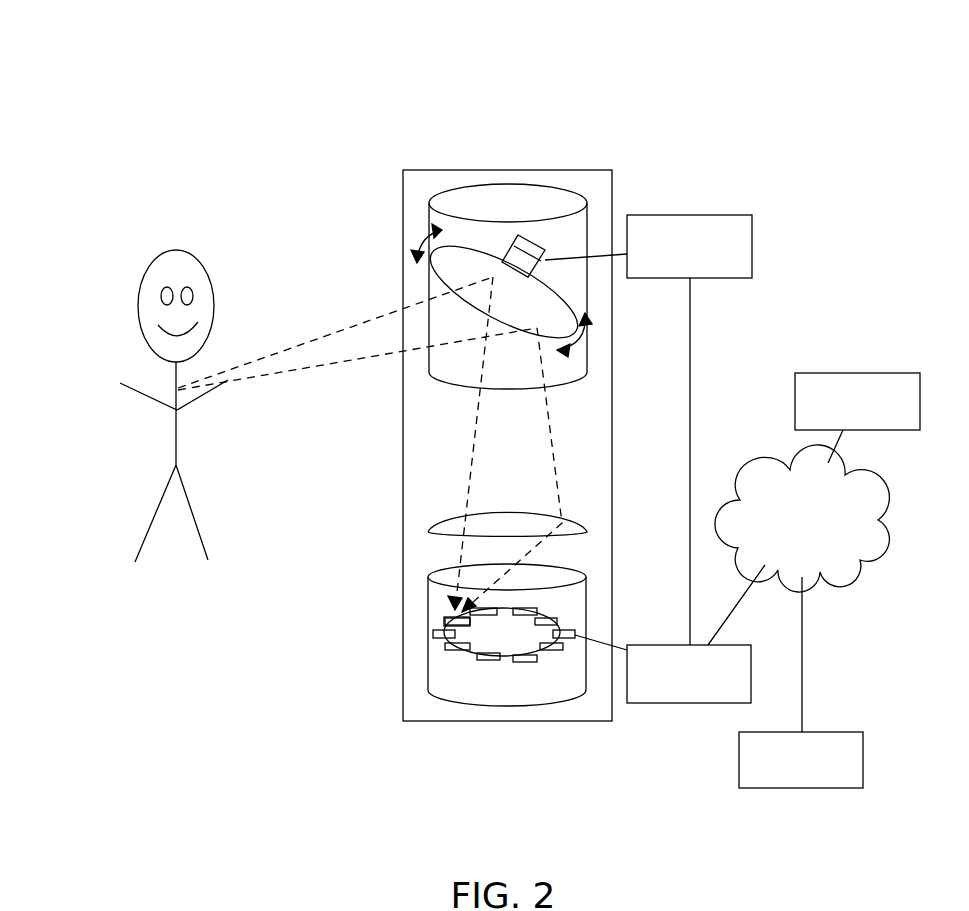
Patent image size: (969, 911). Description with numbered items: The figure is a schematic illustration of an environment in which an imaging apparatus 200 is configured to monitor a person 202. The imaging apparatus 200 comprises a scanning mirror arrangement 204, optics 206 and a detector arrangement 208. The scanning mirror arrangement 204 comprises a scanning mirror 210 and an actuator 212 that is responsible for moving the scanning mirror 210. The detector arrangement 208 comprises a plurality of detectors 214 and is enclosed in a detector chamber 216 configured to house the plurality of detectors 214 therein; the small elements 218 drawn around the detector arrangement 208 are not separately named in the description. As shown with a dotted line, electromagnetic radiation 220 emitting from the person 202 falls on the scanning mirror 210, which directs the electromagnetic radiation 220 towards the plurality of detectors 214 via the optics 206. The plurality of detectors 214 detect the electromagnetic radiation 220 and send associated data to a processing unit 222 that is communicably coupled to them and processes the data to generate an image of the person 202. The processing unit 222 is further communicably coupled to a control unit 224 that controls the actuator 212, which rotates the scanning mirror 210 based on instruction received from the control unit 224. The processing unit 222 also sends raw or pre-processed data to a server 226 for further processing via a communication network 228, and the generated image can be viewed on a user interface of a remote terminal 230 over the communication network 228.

The imaging apparatus 200 is at (402, 168).
The person 202 is at (147, 277).
The scanning mirror arrangement 204 is at (493, 190).
The optics 206 is at (575, 523).
The detector arrangement 208 is at (505, 660).
The scanning mirror 210 is at (473, 257).
The actuator 212 is at (538, 247).
The detectors 214 is at (447, 622).
The detector chamber 216 is at (433, 680).
The sensor elements 218 is at (548, 645).
The electromagnetic radiation 220 is at (312, 340).
The processing unit 222 is at (670, 634).
The control unit 224 is at (689, 430).
The server 226 is at (801, 760).
The communication network 228 is at (802, 588).
The remote terminal 230 is at (857, 418).